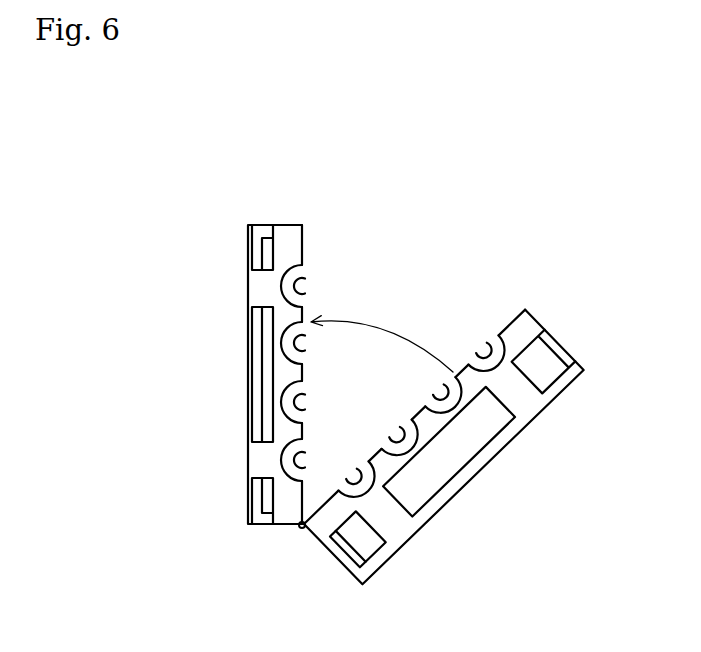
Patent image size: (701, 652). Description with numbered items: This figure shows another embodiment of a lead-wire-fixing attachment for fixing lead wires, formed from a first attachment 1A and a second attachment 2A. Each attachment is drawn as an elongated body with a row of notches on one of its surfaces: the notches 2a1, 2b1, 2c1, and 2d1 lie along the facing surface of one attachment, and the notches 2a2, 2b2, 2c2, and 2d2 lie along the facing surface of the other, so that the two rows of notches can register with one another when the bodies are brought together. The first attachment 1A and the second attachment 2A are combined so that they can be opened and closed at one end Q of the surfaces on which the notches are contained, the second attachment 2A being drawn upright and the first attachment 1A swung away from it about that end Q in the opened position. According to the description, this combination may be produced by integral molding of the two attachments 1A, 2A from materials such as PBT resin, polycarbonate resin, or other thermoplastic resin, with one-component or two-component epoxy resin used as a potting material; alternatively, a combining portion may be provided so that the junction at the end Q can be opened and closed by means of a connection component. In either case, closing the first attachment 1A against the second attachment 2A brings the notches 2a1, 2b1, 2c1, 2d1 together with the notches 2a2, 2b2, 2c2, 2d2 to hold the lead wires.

The second attachment 2A is at (274, 204).
The first attachment 1A is at (566, 324).
The notch 2a1 is at (306, 287).
The notch 2b1 is at (299, 342).
The notch 2c1 is at (299, 400).
The notch 2d1 is at (299, 458).
The notch 2a2 is at (479, 345).
The notch 2b2 is at (436, 402).
The notch 2c2 is at (402, 437).
The notch 2d2 is at (362, 487).
The one end Q is at (300, 529).